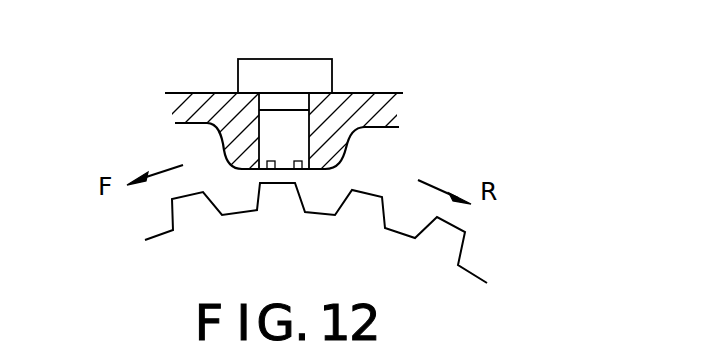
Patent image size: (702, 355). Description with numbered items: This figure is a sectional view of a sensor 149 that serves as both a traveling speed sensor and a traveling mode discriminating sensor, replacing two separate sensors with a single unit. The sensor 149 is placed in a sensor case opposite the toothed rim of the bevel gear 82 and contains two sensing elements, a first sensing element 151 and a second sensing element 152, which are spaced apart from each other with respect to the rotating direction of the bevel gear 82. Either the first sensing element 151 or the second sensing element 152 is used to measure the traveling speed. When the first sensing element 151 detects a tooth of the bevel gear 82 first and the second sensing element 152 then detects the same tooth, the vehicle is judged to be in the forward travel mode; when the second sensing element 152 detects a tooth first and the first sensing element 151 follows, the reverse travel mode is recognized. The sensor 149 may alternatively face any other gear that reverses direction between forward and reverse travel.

The sensor 149 is at (278, 122).
The first sensing element 151 is at (301, 161).
The second sensing element 152 is at (271, 161).
The bevel gear 82 is at (158, 233).